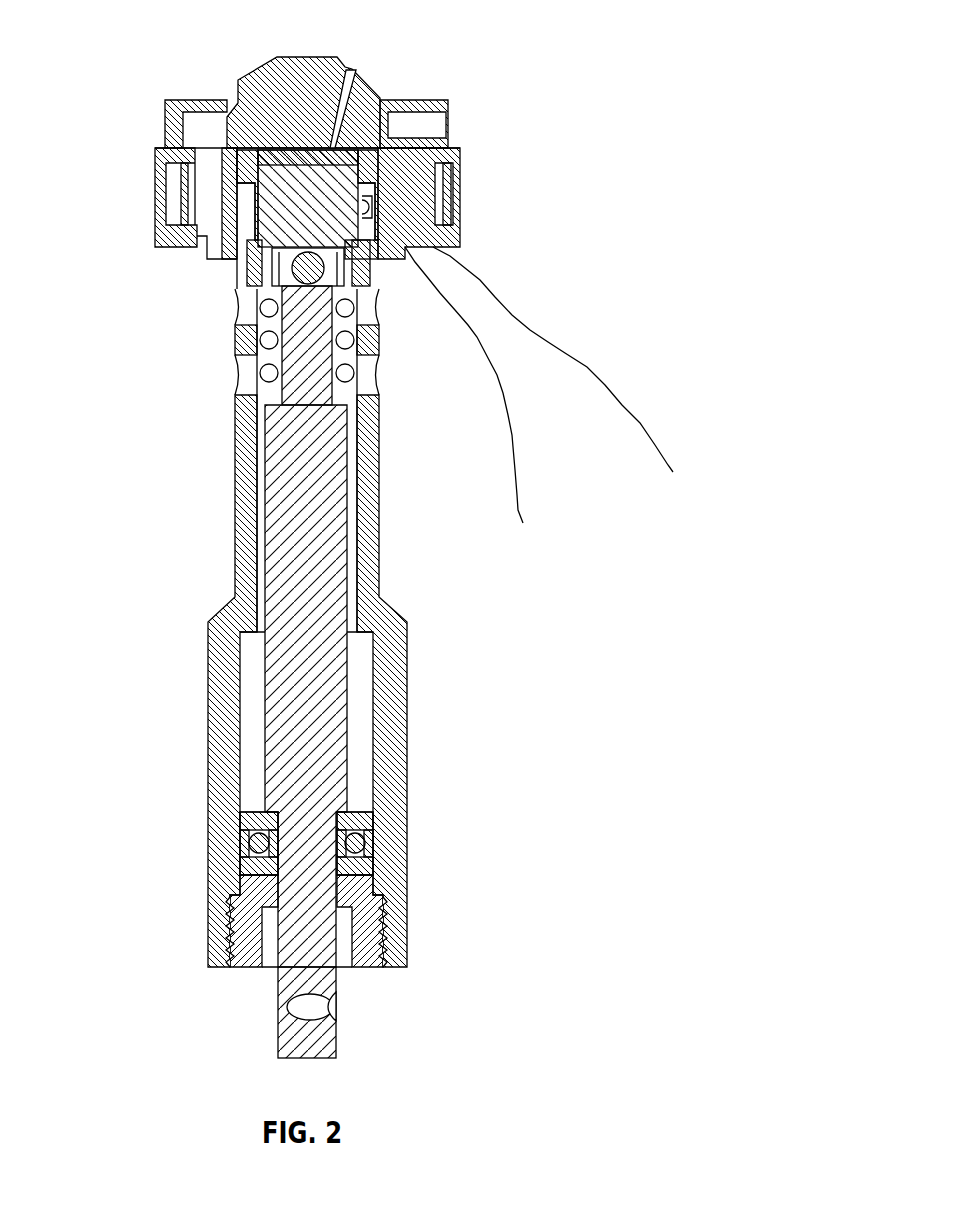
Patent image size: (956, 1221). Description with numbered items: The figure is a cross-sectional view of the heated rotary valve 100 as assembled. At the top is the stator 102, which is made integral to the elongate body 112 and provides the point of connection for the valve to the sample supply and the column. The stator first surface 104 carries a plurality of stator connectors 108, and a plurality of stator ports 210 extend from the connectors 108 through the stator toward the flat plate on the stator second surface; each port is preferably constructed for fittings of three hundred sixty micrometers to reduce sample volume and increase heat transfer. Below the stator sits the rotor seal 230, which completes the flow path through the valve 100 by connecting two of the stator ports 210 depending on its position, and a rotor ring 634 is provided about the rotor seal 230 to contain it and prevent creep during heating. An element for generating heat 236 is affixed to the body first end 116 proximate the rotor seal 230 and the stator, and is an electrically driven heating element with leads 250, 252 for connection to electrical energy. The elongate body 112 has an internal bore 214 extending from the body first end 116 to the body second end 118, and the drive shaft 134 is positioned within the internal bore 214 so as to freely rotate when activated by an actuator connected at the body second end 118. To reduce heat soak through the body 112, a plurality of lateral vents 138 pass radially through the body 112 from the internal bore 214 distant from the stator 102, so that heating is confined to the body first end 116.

The heated rotary valve 100 is at (433, 24).
The stator 102 is at (307, 53).
The stator first surface 104 is at (202, 100).
The stator connectors 108 is at (343, 66).
The body first end 116 is at (155, 193).
The stator ports 210 is at (342, 97).
The rotor ring 634 is at (363, 205).
The element for generating heat 236 is at (376, 209).
The rotor seal 230 is at (400, 259).
The lateral vents 138 is at (243, 375).
The elongate body 112 is at (235, 565).
The internal bore 214 is at (263, 612).
The body second end 118 is at (210, 968).
The drive shaft 134 is at (337, 1037).
The lead 250 is at (587, 363).
The lead 252 is at (497, 390).